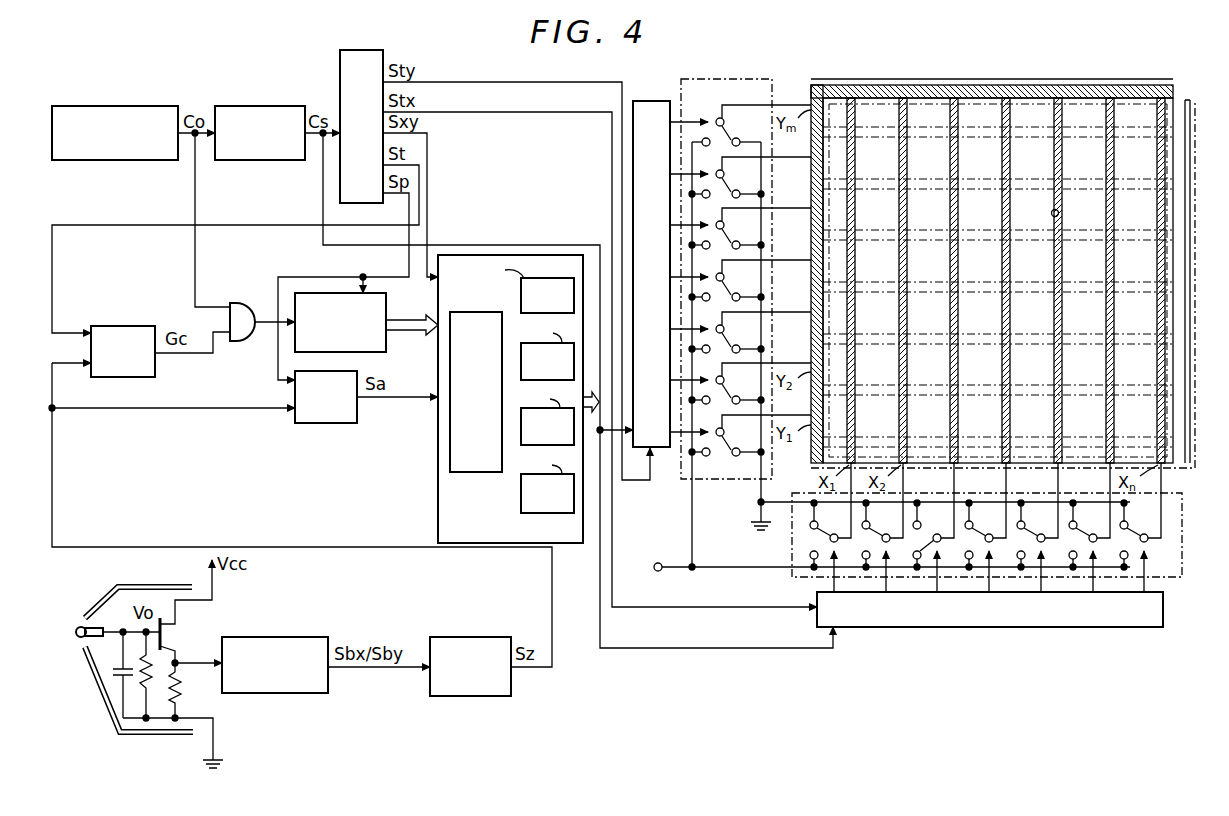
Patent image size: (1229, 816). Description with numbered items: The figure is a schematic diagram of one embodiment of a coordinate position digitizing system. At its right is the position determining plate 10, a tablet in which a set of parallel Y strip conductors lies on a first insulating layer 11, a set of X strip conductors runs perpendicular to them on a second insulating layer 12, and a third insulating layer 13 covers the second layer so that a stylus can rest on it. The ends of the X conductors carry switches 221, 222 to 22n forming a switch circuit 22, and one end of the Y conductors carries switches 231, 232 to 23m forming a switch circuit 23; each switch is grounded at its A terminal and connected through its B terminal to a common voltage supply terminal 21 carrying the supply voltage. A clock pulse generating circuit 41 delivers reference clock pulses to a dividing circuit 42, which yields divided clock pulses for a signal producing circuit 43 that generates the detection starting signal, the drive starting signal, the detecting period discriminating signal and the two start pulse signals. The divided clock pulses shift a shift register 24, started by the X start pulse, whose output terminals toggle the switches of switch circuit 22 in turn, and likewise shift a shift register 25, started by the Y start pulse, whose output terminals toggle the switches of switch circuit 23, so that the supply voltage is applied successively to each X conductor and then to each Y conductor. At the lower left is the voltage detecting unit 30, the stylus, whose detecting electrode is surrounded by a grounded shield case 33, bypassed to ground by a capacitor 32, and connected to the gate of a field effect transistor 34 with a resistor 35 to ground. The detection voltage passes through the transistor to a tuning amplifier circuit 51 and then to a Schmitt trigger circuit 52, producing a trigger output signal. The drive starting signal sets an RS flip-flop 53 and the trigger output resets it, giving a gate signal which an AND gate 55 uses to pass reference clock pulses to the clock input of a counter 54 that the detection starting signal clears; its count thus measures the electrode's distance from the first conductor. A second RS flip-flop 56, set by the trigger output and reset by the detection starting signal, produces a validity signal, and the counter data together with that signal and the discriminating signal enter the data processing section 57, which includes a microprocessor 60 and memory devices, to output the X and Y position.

The position determining plate 10 is at (996, 275).
The first insulating layer 11 is at (811, 83).
The second insulating layer 12 is at (1187, 105).
The third insulating layer 13 is at (1193, 470).
The voltage supply terminal 21 is at (655, 571).
The switch circuit 22 is at (997, 556).
The switch 221 is at (830, 527).
The switch 222 is at (882, 527).
The switch 22n is at (1140, 527).
The switch circuit 23 is at (712, 79).
The switch 231 is at (740, 435).
The switch 232 is at (740, 383).
The switch 23m is at (740, 125).
The shift register 24 is at (930, 627).
The shift register 25 is at (646, 101).
The voltage detecting unit 30 is at (119, 671).
The bypass capacitor 32 is at (110, 672).
The shield case 33 is at (150, 736).
The field effect transistor 34 is at (168, 636).
The resistor 35 is at (142, 680).
The clock pulse generating circuit 41 is at (138, 106).
The dividing circuit 42 is at (262, 106).
The signal producing circuit 43 is at (340, 58).
The tuning amplifier circuit 51 is at (285, 637).
The Schmitt trigger circuit 52 is at (470, 637).
The RS flip-flop 53 is at (118, 326).
The counter 54 is at (386, 306).
The AND gate 55 is at (244, 302).
The RS flip-flop 56 is at (325, 423).
The data processing section 57 is at (425, 399).
The microprocessor 60 is at (452, 318).